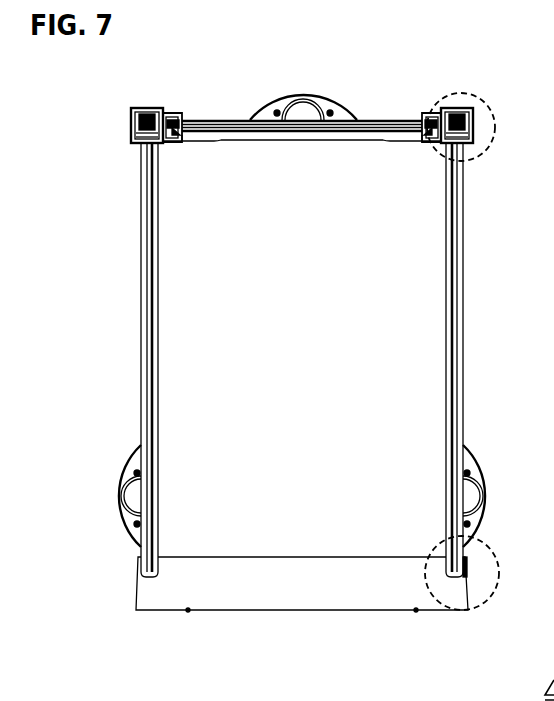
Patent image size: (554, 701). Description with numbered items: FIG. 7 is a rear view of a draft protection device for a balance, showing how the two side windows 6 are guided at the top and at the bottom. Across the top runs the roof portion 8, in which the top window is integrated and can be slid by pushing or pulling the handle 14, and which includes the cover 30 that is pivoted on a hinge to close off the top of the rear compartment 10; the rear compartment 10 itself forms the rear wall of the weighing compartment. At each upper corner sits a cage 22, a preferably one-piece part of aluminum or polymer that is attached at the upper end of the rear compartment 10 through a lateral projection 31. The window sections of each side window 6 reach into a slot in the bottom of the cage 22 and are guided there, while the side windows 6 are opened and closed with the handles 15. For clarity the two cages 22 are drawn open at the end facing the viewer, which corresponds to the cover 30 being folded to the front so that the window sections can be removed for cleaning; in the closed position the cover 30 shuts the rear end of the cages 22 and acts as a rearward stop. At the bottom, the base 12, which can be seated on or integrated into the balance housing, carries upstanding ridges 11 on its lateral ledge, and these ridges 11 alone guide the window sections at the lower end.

The roof portion 8 is at (364, 93).
The cover 30 is at (219, 120).
The handle 14 is at (301, 101).
The cage 22 is at (130, 117).
The lateral projection 31 is at (172, 138).
The window 6 is at (127, 359).
The handle 15 is at (128, 499).
The rear compartment 10 is at (303, 328).
The base 12 is at (276, 586).
The ridge 11 is at (467, 563).